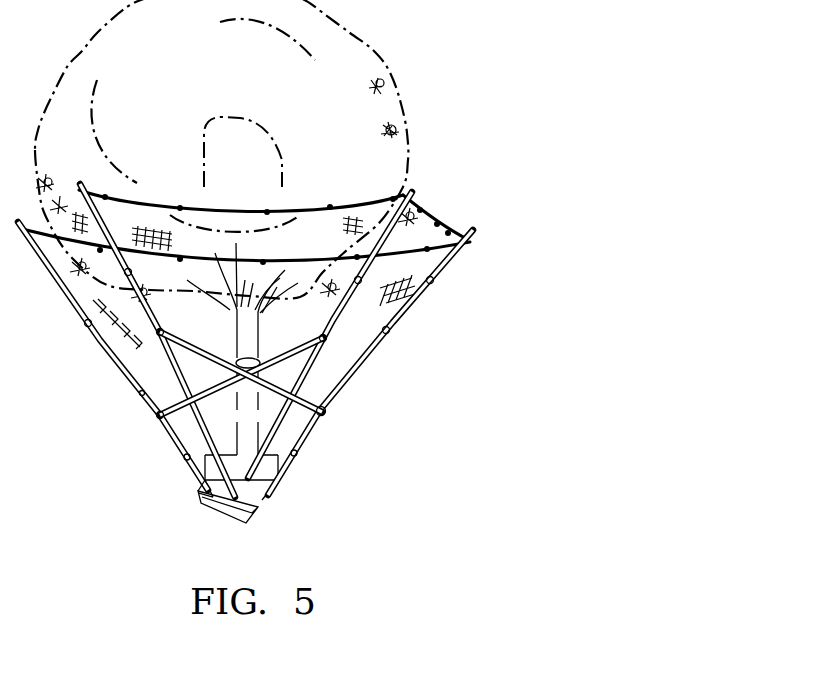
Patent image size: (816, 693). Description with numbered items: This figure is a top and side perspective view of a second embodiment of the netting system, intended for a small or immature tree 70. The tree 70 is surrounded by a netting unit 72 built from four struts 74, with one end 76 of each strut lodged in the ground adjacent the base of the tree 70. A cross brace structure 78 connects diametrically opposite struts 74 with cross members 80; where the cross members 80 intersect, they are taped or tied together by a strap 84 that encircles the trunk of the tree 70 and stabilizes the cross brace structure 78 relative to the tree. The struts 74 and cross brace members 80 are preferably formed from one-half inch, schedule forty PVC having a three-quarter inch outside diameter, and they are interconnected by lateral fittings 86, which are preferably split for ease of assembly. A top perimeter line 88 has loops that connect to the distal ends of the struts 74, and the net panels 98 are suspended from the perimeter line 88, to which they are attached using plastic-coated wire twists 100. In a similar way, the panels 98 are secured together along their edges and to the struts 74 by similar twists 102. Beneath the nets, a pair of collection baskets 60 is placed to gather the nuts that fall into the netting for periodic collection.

The collection baskets 60 is at (200, 500).
The smaller tree 70 is at (390, 137).
The netting unit 72 is at (427, 213).
The struts 74 is at (425, 283).
The end of strut 76 is at (268, 498).
The cross brace structure 78 is at (262, 361).
The cross members 80 is at (184, 349).
The strap 84 is at (263, 330).
The lateral fittings 86 is at (323, 415).
The top perimeter line 88 is at (450, 257).
The net panels 98 is at (113, 327).
The wire twists 100 is at (188, 230).
The twists 102 is at (333, 392).